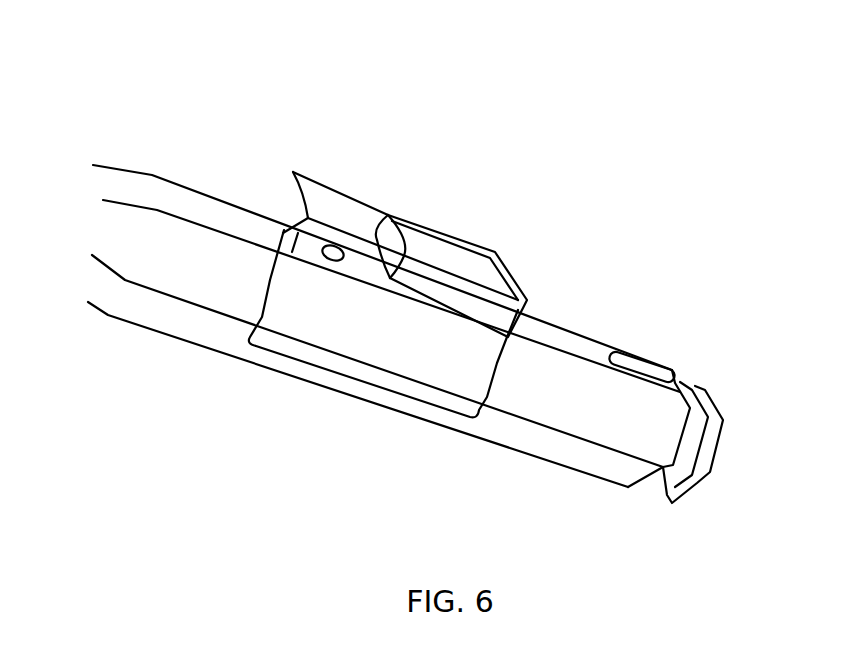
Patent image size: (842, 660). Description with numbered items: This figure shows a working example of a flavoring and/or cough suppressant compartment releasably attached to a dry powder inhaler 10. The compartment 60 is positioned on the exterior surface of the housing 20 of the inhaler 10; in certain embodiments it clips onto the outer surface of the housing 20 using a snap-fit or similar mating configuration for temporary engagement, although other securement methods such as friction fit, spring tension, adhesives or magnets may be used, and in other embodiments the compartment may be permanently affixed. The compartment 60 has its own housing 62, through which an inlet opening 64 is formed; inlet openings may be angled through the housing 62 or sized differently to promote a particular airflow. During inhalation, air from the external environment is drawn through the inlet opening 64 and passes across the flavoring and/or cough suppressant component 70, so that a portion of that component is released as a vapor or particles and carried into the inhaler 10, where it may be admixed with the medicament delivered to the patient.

The dry powder inhaler 10 is at (405, 279).
The housing 20 is at (542, 335).
The compartment 60 is at (401, 179).
The housing 62 is at (460, 237).
The inlet opening 64 is at (304, 230).
The flavoring and/or cough suppressant component 70 is at (385, 238).